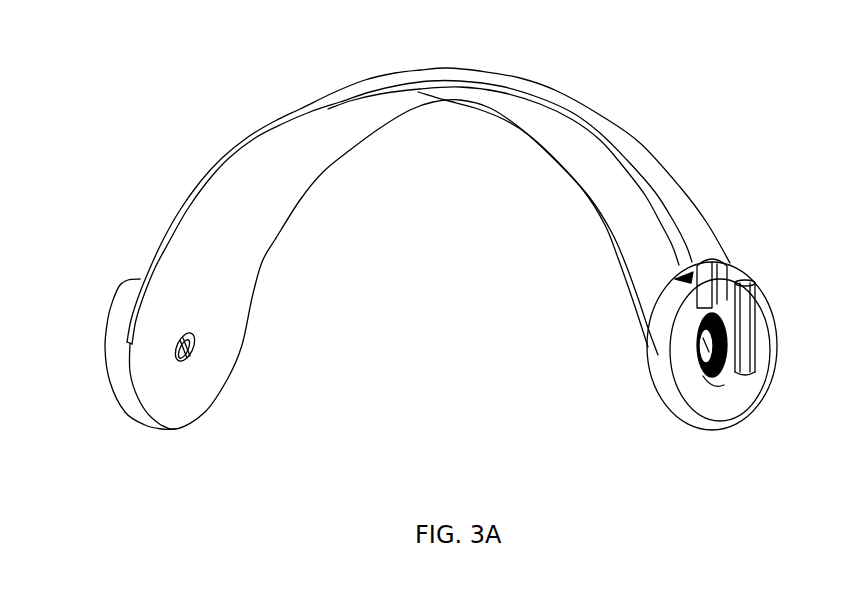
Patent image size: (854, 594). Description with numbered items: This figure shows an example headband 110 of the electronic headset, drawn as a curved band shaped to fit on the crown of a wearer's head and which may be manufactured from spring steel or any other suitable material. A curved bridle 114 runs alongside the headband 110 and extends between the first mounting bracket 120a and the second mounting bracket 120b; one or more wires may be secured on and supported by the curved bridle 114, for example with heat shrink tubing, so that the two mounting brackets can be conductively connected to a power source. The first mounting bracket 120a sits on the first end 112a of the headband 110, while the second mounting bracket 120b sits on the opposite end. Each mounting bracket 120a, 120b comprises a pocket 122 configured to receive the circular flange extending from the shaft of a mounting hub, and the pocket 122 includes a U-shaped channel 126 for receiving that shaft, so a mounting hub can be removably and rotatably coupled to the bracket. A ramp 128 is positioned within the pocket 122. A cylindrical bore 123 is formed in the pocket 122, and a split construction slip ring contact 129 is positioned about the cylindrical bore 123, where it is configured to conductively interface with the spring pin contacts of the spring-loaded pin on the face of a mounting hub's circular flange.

The headband 110 is at (640, 146).
The curved bridle 114 is at (462, 80).
The first end 112a is at (222, 392).
The first mounting bracket 120a is at (108, 352).
The second mounting bracket 120b is at (658, 372).
The cylindrical bore 123 is at (192, 336).
The pocket 122 is at (725, 296).
The U-shaped channel 126 is at (752, 306).
The ramp 128 is at (693, 278).
The split construction slip ring contact 129 is at (713, 373).